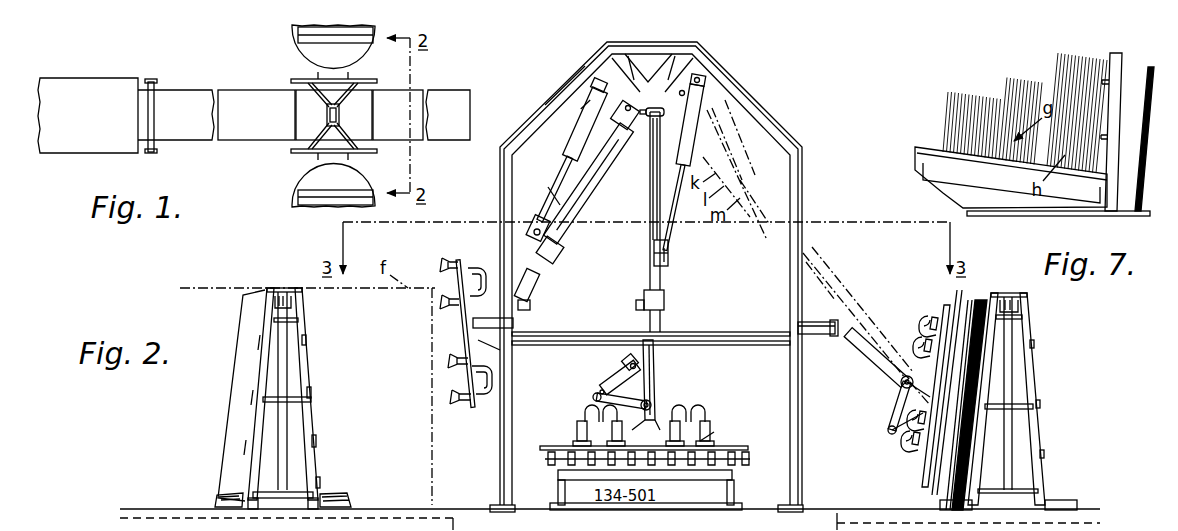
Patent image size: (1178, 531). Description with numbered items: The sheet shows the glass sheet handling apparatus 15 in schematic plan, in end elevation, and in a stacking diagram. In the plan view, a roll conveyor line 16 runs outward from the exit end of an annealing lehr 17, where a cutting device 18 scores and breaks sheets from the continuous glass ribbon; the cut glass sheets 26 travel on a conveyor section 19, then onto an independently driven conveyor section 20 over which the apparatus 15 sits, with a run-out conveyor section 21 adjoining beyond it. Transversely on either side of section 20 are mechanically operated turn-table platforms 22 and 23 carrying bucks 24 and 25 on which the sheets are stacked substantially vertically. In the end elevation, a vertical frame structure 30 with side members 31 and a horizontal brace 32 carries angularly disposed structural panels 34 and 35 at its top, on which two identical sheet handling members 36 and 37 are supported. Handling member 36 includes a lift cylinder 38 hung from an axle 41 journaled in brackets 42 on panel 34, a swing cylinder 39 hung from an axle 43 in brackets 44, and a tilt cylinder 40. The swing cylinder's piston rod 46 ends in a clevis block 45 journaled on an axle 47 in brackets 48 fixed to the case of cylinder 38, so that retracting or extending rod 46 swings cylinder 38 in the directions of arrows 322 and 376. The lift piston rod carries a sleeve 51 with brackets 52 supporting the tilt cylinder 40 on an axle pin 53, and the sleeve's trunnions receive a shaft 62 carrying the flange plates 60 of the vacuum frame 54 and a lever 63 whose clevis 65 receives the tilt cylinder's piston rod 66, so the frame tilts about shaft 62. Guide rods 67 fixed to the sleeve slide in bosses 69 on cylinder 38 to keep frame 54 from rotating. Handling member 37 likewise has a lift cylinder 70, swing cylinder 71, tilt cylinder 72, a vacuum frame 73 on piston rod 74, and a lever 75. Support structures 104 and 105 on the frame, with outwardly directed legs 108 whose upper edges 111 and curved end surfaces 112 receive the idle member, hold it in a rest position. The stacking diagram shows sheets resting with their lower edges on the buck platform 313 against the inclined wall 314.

In FIG. 1, the handling apparatus 15 is at (310, 85).
In FIG. 2, the handling apparatus 15 is at (572, 104).
In FIG. 1, the roll conveyor line 16 is at (200, 87).
In FIG. 1, the annealing lehr 17 is at (84, 103).
In FIG. 1, the cutting device 18 is at (153, 125).
In FIG. 1, the conveyor section 19 is at (235, 128).
In FIG. 1, the conveyor section 20 is at (310, 125).
In FIG. 2, the conveyor section 20 is at (558, 478).
In FIG. 1, the run-out conveyor section 21 is at (441, 105).
In FIG. 1, the turn-table platform 22 is at (347, 50).
In FIG. 2, the turn-table platform 22 is at (877, 510).
In FIG. 1, the turn-table platform 23 is at (347, 180).
In FIG. 2, the turn-table platform 23 is at (368, 507).
In FIG. 1, the buck 24 is at (300, 37).
In FIG. 2, the buck 24 is at (1033, 423).
In FIG. 1, the buck 25 is at (298, 196).
In FIG. 2, the buck 25 is at (301, 348).
In FIG. 2, the glass sheet 26 is at (560, 446).
In FIG. 2, the vertical frame structure 30 is at (498, 171).
In FIG. 2, the side member 31 is at (506, 190).
In FIG. 2, the horizontal brace 32 is at (565, 338).
In FIG. 2, the structural panel 34 is at (672, 90).
In FIG. 2, the structural panel 35 is at (628, 90).
In FIG. 2, the sheet handling member 36 is at (642, 246).
In FIG. 2, the sheet handling member 37 is at (547, 186).
In FIG. 2, the lift cylinder 38 is at (652, 255).
In FIG. 2, the swing cylinder 39 is at (687, 120).
In FIG. 2, the tilt cylinder 40 is at (612, 380).
In FIG. 2, the axle 41 is at (667, 108).
In FIG. 2, the bracket 42 is at (667, 98).
In FIG. 2, the axle 43 is at (704, 80).
In FIG. 2, the bracket 44 is at (700, 74).
In FIG. 2, the clevis block 45 is at (668, 252).
In FIG. 2, the piston rod 46 is at (664, 234).
In FIG. 2, the axle 47 is at (668, 268).
In FIG. 2, the bracket 48 is at (670, 262).
In FIG. 2, the sleeve 51 is at (655, 350).
In FIG. 2, the bracket 52 is at (636, 364).
In FIG. 2, the axle pin 53 is at (628, 368).
In FIG. 2, the vacuum frame 54 is at (717, 432).
In FIG. 2, the flange plate 60 is at (688, 414).
In FIG. 2, the shaft 62 is at (652, 404).
In FIG. 2, the lever 63 is at (630, 393).
In FIG. 2, the clevis 65 is at (593, 398).
In FIG. 2, the piston rod 66 is at (604, 390).
In FIG. 2, the guide rod 67 is at (644, 302).
In FIG. 2, the boss 69 is at (664, 305).
In FIG. 2, the lift cylinder 70 is at (569, 203).
In FIG. 2, the swing cylinder 71 is at (574, 140).
In FIG. 2, the tilt cylinder 72 is at (529, 306).
In FIG. 2, the vacuum frame 73 is at (463, 262).
In FIG. 2, the piston rod 74 is at (537, 240).
In FIG. 2, the lever 75 is at (500, 350).
In FIG. 2, the support structure 104 is at (808, 338).
In FIG. 2, the support structure 105 is at (470, 328).
In FIG. 2, the outwardly directed leg 108 is at (826, 328).
In FIG. 2, the upper edge 111 is at (810, 322).
In FIG. 2, the curved surface 112 is at (845, 333).
In FIG. 7, the buck platform 313 is at (927, 147).
In FIG. 7, the inclined wall 314 is at (1108, 97).
In FIG. 2, the arrow 322 is at (768, 291).
In FIG. 2, the arrow 376 is at (722, 270).